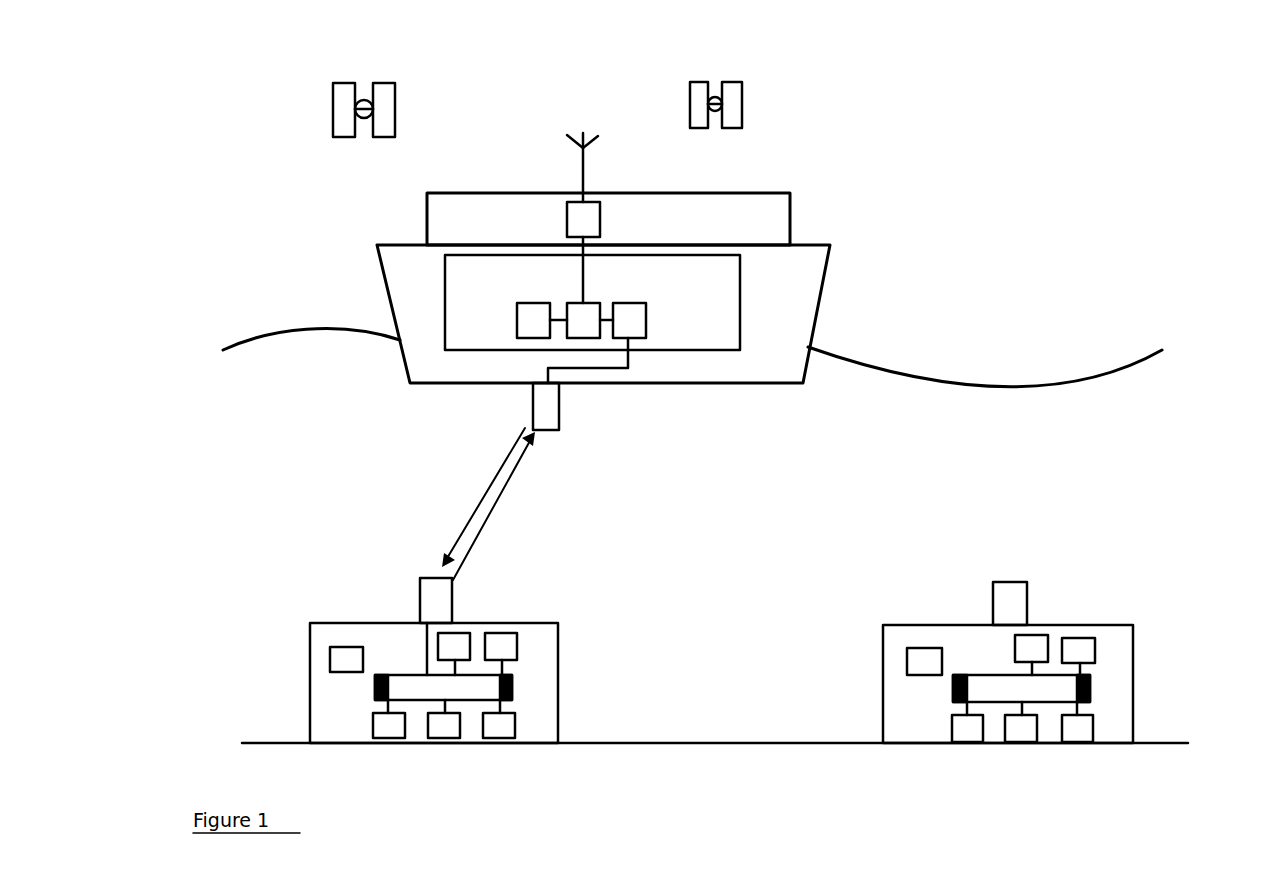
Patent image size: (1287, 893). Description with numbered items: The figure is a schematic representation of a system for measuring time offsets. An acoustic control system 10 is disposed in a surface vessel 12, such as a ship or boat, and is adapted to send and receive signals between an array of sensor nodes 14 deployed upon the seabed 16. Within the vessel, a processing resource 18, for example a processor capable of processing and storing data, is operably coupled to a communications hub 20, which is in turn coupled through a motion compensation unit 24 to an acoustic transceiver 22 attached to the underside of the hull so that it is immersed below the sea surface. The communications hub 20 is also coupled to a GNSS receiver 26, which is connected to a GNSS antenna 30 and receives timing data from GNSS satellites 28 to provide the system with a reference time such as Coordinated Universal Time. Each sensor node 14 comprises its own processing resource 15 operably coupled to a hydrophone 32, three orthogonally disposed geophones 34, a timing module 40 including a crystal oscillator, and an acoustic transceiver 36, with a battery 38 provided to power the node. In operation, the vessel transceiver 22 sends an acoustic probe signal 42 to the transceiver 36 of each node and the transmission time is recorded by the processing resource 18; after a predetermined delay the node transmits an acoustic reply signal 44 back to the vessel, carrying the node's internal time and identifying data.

The acoustic control system 10 is at (869, 260).
The surface vessel 12 is at (668, 288).
The sensor node 14 is at (777, 662).
The processing resource 15 is at (425, 646).
The seabed 16 is at (715, 699).
The processing resource 18 is at (401, 313).
The communications hub 20 is at (729, 242).
The acoustic transceiver 22 is at (615, 424).
The motion compensation unit 24 is at (795, 256).
The GNSS receiver 26 is at (436, 221).
The GNSS satellite 28 is at (566, 118).
The GNSS antenna 30 is at (619, 185).
The hydrophone 32 is at (560, 621).
The geophones 34 is at (459, 767).
The acoustic transceiver 36 is at (375, 588).
The battery 38 is at (286, 646).
The timing module 40 is at (500, 648).
The acoustic probe signal 42 is at (436, 497).
The acoustic reply signal 44 is at (551, 506).